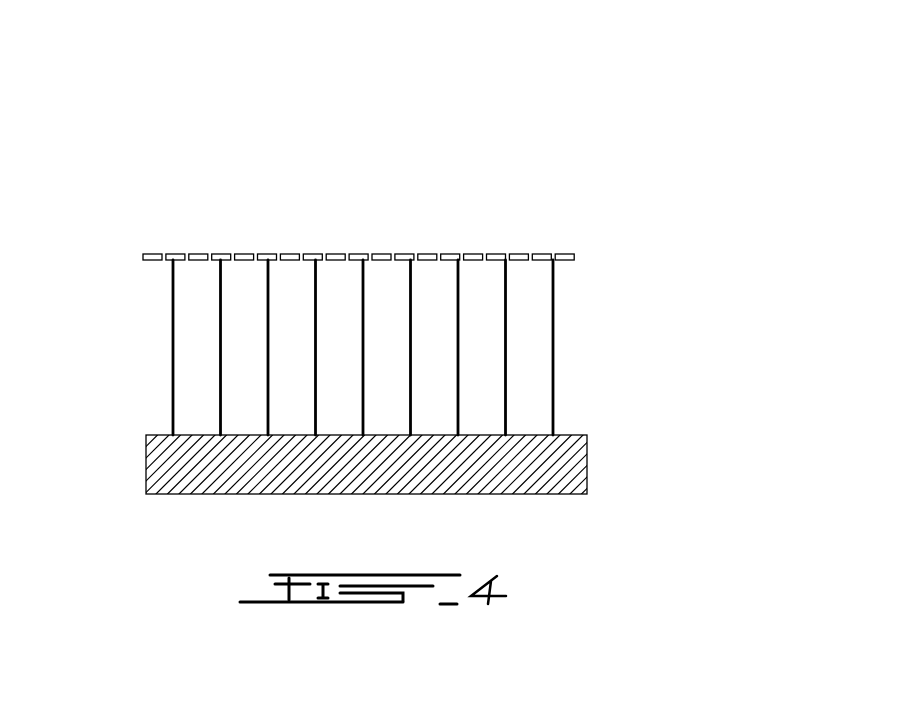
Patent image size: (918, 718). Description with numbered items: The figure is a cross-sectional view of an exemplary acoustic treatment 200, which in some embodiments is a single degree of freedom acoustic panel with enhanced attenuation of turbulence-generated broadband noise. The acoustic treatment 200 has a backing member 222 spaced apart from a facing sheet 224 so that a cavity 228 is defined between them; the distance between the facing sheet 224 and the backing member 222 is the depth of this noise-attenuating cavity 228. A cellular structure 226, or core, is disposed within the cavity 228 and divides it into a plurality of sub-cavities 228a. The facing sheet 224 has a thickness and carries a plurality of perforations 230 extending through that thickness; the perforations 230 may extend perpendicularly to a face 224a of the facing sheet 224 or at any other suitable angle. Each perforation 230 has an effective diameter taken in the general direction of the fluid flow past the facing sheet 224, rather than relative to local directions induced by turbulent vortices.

The acoustic treatment 200 is at (648, 125).
The backing member 222 is at (453, 495).
The facing sheet 224 is at (262, 240).
The face of the facing sheet 224a is at (590, 233).
The cellular structure 226 is at (157, 393).
The cavity 228 is at (482, 318).
The sub-cavities 228a is at (240, 348).
The perforations 230 is at (508, 253).